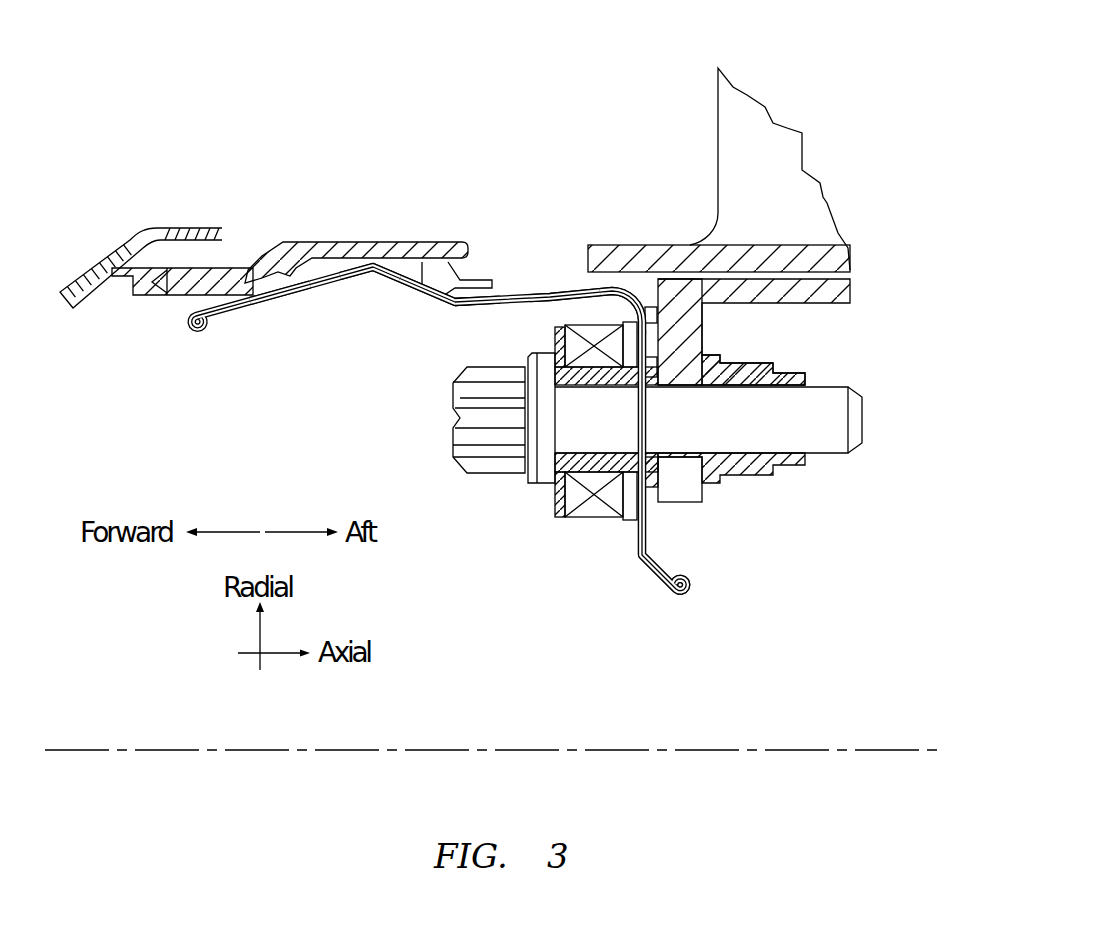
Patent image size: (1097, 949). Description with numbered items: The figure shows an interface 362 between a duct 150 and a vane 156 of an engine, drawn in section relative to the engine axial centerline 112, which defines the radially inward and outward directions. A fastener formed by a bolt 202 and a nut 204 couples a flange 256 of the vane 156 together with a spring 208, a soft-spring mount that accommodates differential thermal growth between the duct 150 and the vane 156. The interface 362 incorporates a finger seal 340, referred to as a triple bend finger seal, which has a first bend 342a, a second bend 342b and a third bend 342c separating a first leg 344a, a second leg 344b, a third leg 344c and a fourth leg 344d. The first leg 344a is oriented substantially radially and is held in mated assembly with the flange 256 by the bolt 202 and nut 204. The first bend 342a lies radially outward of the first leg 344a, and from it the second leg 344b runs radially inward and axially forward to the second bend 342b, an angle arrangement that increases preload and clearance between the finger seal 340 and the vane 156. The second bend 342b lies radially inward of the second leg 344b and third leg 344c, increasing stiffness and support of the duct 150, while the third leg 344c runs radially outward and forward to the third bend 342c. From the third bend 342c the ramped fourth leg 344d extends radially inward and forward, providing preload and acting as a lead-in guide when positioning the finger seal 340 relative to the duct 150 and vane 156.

The engine/axial centerline 112 is at (930, 748).
The duct 150 is at (317, 247).
The vane 156 is at (813, 203).
The bolt 202 is at (557, 440).
The nut 204 is at (790, 463).
The spring 208 is at (592, 497).
The flange 256 is at (685, 330).
The finger seal 340 is at (520, 297).
The first bend 342a is at (636, 291).
The second bend 342b is at (472, 308).
The third bend 342c is at (373, 262).
The first leg 344a is at (650, 445).
The second leg 344b is at (551, 295).
The third leg 344c is at (428, 298).
The fourth leg 344d is at (268, 275).
The interface 362 is at (852, 100).